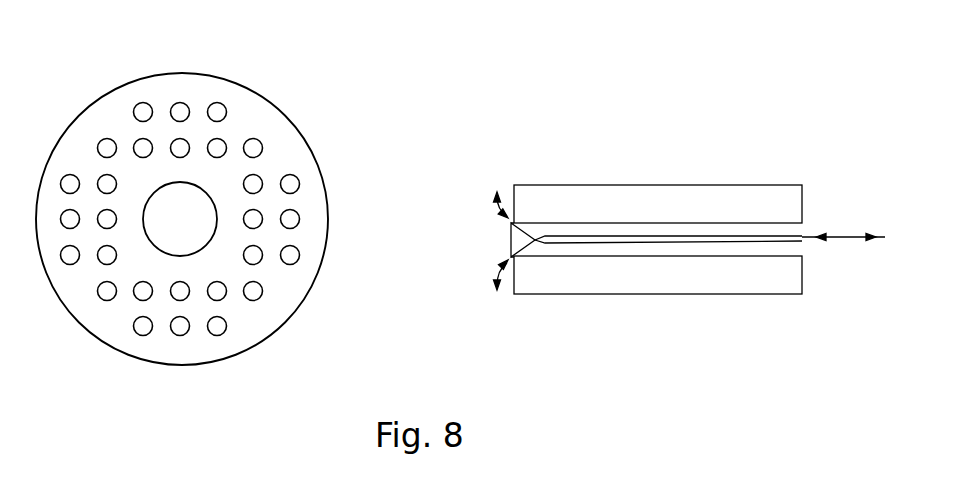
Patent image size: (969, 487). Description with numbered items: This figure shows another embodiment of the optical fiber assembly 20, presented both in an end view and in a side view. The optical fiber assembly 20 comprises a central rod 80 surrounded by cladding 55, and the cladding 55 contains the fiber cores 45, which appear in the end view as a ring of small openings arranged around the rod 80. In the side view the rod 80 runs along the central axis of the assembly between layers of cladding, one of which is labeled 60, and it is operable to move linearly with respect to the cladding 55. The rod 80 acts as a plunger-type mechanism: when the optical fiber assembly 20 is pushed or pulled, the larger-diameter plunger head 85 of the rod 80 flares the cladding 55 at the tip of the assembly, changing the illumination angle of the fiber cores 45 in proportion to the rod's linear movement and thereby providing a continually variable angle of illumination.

The optical fiber assembly 20 is at (460, 200).
The fiber cores 45 is at (218, 110).
The cladding 55 is at (292, 145).
The layer / wall 60 is at (572, 185).
The central rod 80 is at (190, 225).
The plunger head 85 is at (502, 242).